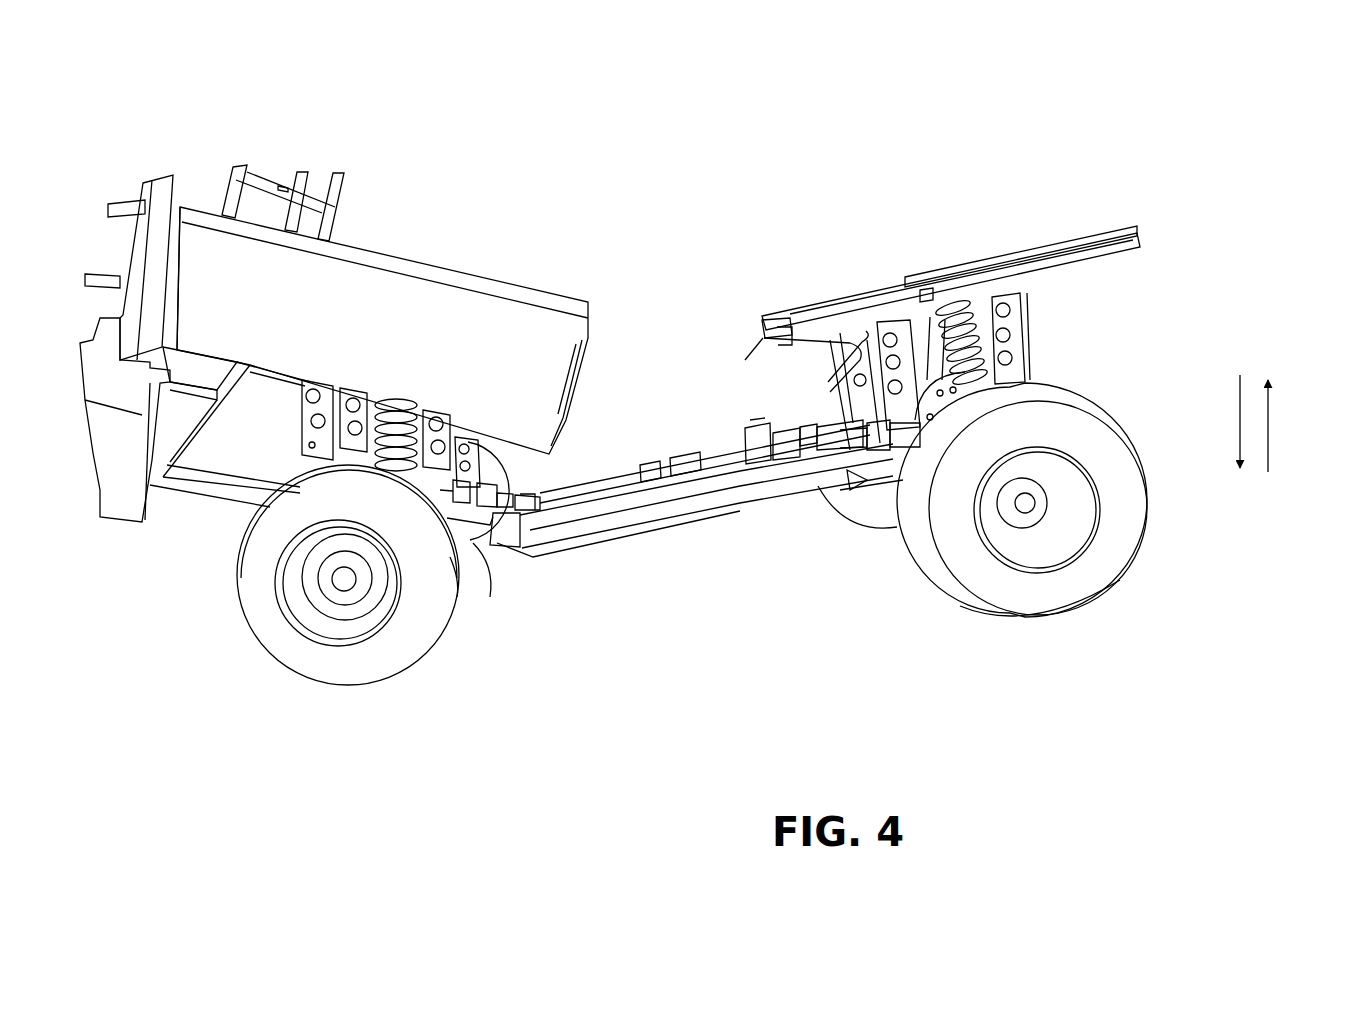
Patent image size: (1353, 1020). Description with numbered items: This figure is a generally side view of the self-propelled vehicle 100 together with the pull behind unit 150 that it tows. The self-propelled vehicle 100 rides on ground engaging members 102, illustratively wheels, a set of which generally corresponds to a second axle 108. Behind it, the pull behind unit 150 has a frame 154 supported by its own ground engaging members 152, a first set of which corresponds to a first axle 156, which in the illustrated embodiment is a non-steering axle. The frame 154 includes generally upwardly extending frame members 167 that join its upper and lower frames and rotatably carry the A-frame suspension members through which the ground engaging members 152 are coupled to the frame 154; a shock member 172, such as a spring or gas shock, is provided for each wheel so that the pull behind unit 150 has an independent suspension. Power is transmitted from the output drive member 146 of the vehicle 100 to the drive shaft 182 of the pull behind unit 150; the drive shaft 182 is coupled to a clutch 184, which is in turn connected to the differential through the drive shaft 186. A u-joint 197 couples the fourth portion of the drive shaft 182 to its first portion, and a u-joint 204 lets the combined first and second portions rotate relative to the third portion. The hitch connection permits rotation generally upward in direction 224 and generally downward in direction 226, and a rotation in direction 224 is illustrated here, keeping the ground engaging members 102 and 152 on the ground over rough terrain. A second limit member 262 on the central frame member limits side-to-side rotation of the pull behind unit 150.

The self-propelled vehicle 100 is at (452, 217).
The ground engaging members 102 is at (360, 692).
The second axle 108 is at (292, 717).
The output drive member 146 is at (470, 545).
The pull behind unit 150 is at (934, 193).
The ground engaging members 152 is at (1104, 381).
The frame 154 is at (1092, 290).
The first axle 156 is at (987, 640).
The generally upwardly extending frame members 167 is at (1042, 338).
The shock member 172 is at (972, 318).
The drive shaft 182 is at (651, 415).
The clutch 184 is at (754, 412).
The drive shaft 186 is at (787, 413).
The u-joint 197 is at (540, 480).
The u-joint 204 is at (681, 447).
The upward direction 224 is at (1268, 425).
The downward direction 226 is at (1240, 424).
The second limit member 262 is at (684, 535).